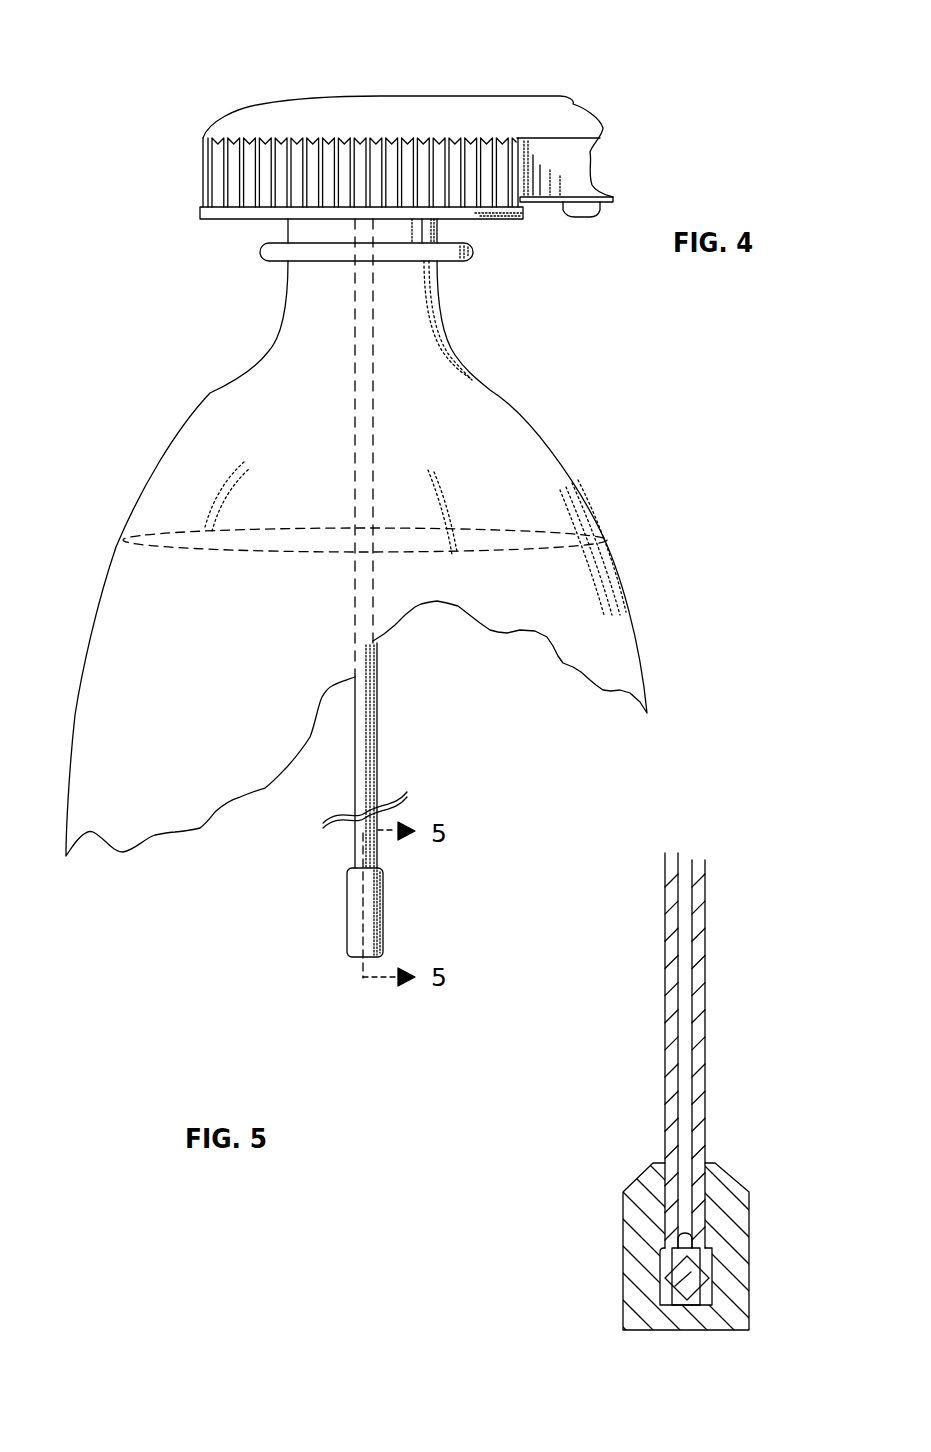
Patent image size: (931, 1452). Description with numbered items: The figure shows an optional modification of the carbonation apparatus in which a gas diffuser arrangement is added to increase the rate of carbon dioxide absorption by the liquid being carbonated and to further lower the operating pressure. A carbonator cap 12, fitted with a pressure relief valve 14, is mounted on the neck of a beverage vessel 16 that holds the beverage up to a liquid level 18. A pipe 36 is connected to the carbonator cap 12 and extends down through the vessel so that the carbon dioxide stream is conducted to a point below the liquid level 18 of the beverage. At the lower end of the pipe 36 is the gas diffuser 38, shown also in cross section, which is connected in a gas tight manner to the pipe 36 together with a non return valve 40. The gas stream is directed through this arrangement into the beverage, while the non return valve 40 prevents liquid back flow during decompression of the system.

In FIG. 4, the carbonator cap 12 is at (392, 90).
In FIG. 4, the pressure relief valve 14 is at (575, 225).
In FIG. 4, the beverage vessel 16 is at (210, 393).
In FIG. 4, the liquid level 18 is at (157, 538).
In FIG. 4, the pipe 36 is at (382, 780).
In FIG. 5, the pipe 36 is at (655, 957).
In FIG. 4, the gas diffuser 38 is at (387, 915).
In FIG. 5, the gas diffuser 38 is at (743, 1178).
In FIG. 5, the non return valve 40 is at (657, 1307).